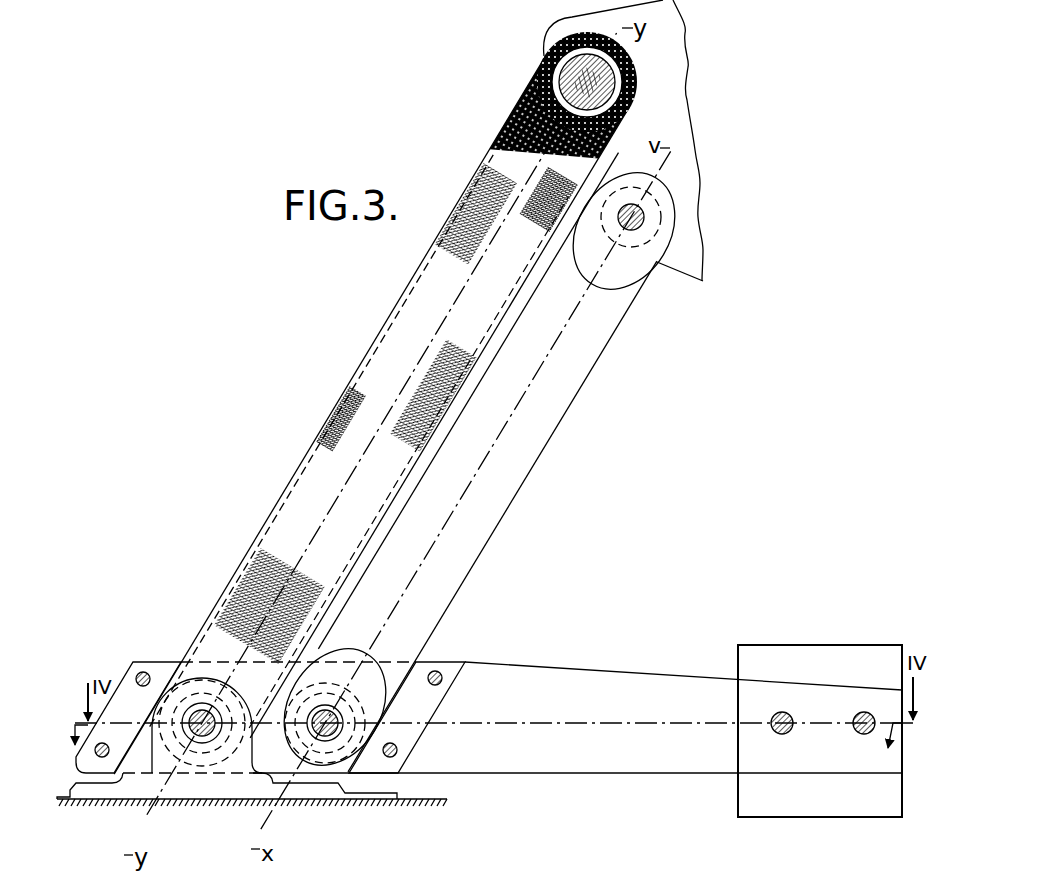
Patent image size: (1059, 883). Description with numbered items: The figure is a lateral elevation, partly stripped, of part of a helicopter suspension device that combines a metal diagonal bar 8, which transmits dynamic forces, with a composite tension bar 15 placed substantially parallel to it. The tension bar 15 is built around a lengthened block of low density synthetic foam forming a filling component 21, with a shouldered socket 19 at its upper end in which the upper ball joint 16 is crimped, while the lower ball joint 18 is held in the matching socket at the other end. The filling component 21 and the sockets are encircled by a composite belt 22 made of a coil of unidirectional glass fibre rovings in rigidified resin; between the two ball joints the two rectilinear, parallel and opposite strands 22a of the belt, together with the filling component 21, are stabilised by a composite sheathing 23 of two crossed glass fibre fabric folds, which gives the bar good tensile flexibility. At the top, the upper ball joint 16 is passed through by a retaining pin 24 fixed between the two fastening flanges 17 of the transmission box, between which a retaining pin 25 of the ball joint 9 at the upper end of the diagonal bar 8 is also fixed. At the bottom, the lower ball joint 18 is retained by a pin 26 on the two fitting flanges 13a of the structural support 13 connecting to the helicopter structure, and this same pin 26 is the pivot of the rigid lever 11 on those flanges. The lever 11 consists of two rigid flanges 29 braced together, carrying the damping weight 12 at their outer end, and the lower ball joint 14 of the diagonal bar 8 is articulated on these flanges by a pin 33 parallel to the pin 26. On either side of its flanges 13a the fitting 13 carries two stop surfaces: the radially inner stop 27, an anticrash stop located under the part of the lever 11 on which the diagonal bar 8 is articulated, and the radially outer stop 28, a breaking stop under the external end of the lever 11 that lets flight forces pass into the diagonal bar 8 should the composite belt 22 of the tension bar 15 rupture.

The diagonal bar 8 is at (537, 432).
The ball joint 9 is at (638, 233).
The rigid lever 11 is at (624, 667).
The damping weight 12 is at (765, 797).
The structural support 13 is at (200, 788).
The fitting flanges 13a is at (140, 755).
The ball joint 14 is at (369, 776).
The tension bar 15 is at (390, 353).
The upper ball joint 16 is at (607, 82).
The fastening flanges 17 is at (650, 42).
The lower ball joint 18 is at (190, 660).
The shouldered socket 19 is at (518, 100).
The filling component 21 is at (502, 132).
The composite belt 22 is at (333, 408).
The belt strands 22a is at (340, 583).
The composite sheathing 23 is at (313, 498).
The retaining pin 24 is at (563, 72).
The retaining pin 25 is at (644, 220).
The pin 26 is at (193, 720).
The stop surface 27 is at (365, 760).
The stop surface 28 is at (86, 787).
The rigid flanges 29 is at (630, 745).
The pin 33 is at (325, 735).